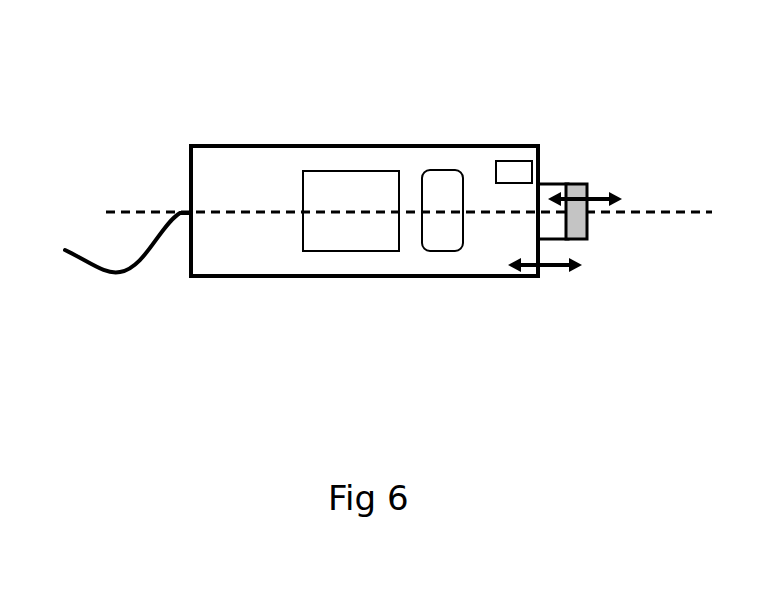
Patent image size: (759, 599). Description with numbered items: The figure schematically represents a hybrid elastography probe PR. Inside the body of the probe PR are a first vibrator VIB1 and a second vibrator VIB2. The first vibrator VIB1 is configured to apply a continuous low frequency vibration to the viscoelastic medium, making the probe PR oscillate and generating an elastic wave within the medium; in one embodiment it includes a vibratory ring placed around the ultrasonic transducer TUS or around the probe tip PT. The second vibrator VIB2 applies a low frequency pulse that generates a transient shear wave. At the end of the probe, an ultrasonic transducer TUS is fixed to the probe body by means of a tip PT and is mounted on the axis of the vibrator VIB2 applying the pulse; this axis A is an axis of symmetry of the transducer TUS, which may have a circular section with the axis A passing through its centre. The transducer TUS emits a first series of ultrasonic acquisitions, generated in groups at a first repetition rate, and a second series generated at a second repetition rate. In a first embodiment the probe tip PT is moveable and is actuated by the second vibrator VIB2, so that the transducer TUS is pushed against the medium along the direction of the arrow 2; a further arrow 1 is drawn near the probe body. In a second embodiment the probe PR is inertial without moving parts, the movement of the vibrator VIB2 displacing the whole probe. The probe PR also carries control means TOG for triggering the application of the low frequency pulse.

The hybrid elastography probe PR is at (275, 131).
The axis of movement of the vibrator A is at (409, 194).
The first vibrator VIB1 is at (513, 160).
The second vibrator VIB2 is at (328, 254).
The control means TOG is at (453, 168).
The probe tip PT is at (563, 182).
The ultrasonic transducer TUS is at (597, 228).
The arrow 1 is at (557, 280).
The arrow 2 is at (603, 175).